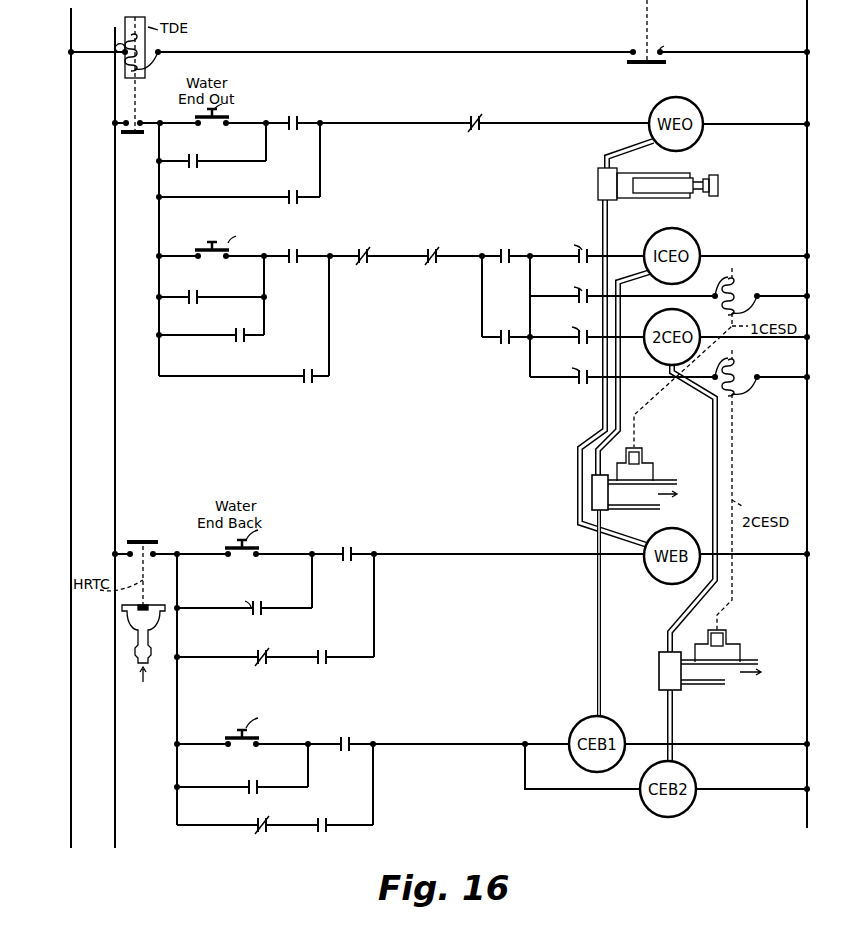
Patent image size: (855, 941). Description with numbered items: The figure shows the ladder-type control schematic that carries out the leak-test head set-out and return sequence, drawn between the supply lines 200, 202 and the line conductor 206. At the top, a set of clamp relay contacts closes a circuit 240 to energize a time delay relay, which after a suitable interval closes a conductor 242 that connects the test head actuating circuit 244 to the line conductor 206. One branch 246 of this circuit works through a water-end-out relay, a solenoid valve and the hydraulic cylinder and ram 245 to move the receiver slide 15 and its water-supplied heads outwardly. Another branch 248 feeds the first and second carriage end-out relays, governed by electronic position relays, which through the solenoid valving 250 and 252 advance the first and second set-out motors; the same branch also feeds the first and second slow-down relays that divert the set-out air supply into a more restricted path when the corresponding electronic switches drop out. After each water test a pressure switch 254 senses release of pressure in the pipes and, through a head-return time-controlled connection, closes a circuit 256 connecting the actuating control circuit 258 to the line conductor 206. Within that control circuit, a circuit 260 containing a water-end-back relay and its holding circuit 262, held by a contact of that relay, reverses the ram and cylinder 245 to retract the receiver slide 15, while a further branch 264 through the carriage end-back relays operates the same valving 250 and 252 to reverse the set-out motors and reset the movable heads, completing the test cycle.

The receiver slide 15 is at (718, 186).
The power supply line 200 is at (70, 146).
The return line 202 is at (806, 91).
The line conductor 206 is at (114, 175).
The circuit 240 is at (312, 56).
The conductor 242 is at (122, 118).
The test head actuating circuit 244 is at (158, 214).
The hydraulic cylinder and ram 245 is at (672, 195).
The circuit branch 246 is at (390, 121).
The branch 248 is at (352, 255).
The solenoid valving 250 is at (608, 497).
The solenoid valving 252 is at (658, 674).
The pressure switch 254 is at (122, 626).
The circuit 256 is at (122, 553).
The actuating control circuit 258 is at (176, 810).
The circuit 260 is at (542, 553).
The holding circuit 262 is at (294, 612).
The branch 264 is at (480, 743).